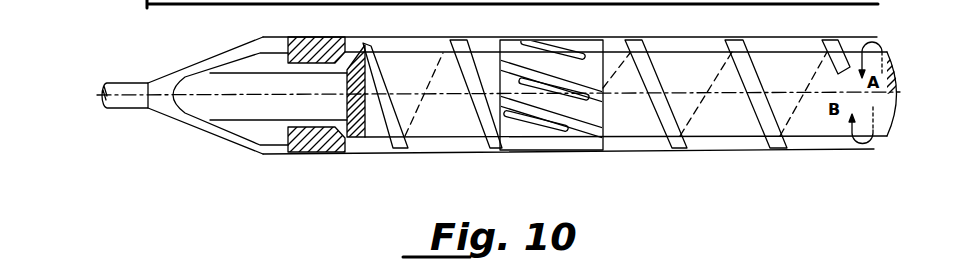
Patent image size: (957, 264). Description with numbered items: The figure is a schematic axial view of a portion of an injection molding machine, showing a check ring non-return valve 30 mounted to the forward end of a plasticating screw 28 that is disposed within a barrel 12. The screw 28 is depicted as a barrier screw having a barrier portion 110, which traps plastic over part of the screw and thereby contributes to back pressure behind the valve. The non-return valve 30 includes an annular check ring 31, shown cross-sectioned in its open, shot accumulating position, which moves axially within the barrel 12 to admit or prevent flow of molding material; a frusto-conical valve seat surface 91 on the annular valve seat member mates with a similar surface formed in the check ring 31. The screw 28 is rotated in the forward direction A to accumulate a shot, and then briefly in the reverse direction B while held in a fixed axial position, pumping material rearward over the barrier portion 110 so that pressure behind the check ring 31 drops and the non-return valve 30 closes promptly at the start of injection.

The barrel 12 is at (827, 151).
The plasticating screw 28 is at (725, 137).
The non-return valve 30 is at (237, 135).
The check ring 31 is at (350, 148).
The frusto-conical valve seat surface 91 is at (366, 152).
The barrier portion 110 is at (607, 151).